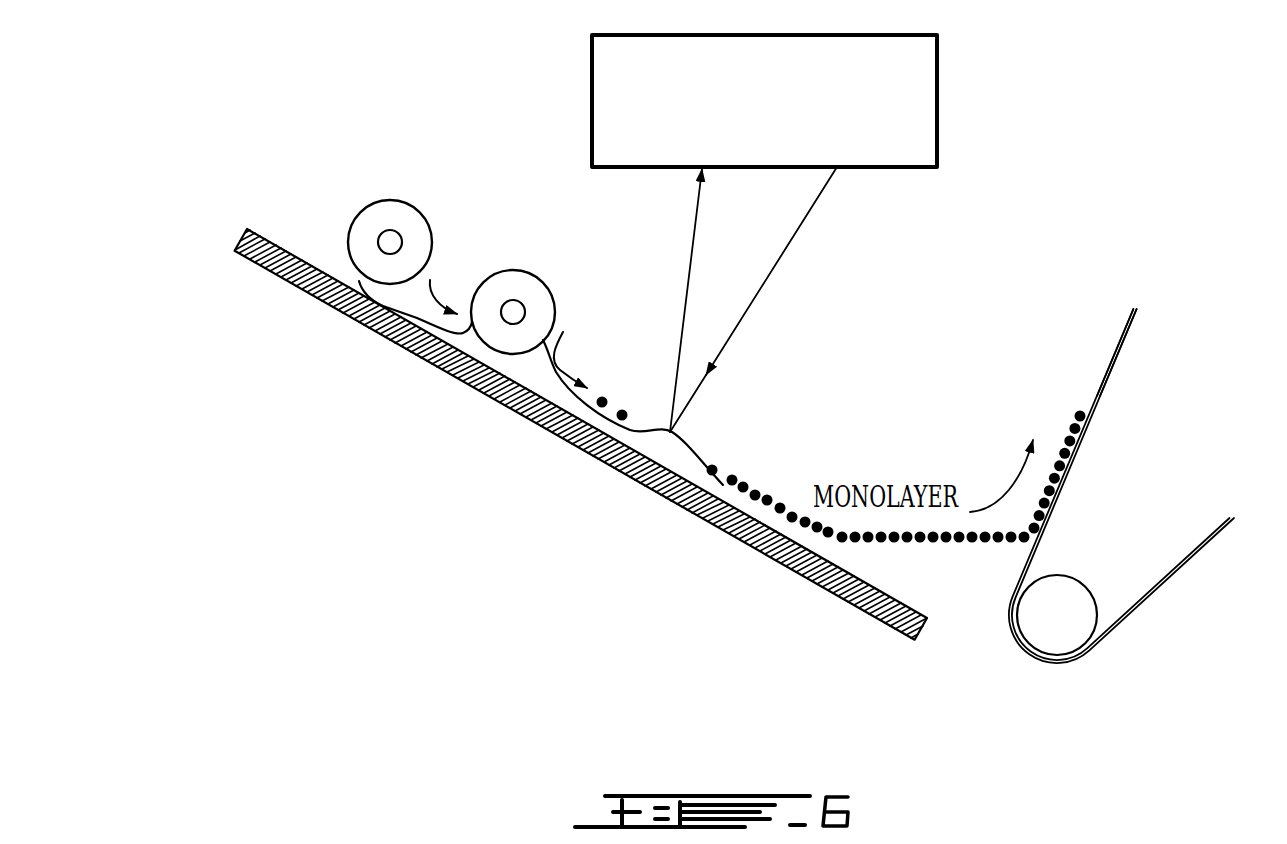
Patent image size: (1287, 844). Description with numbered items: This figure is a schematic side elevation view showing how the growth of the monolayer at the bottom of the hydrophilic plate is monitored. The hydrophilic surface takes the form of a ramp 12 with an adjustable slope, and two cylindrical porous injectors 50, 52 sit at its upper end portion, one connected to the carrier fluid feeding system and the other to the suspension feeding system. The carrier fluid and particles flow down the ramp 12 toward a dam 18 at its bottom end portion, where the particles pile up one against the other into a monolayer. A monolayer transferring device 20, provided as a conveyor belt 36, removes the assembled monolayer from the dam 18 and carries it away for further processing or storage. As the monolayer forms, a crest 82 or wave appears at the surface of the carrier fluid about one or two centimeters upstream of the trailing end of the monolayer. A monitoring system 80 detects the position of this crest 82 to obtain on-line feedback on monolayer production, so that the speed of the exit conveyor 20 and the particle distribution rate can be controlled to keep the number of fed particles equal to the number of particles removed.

The ramp 12 is at (487, 393).
The dam 18 is at (957, 603).
The monolayer transferring device 20 is at (1122, 358).
The conveyor belt 36 is at (1133, 311).
The cylindrical porous injector 50 is at (396, 203).
The cylindrical porous injector 52 is at (519, 279).
The monitoring system 80 is at (937, 88).
The crest 82 is at (670, 432).